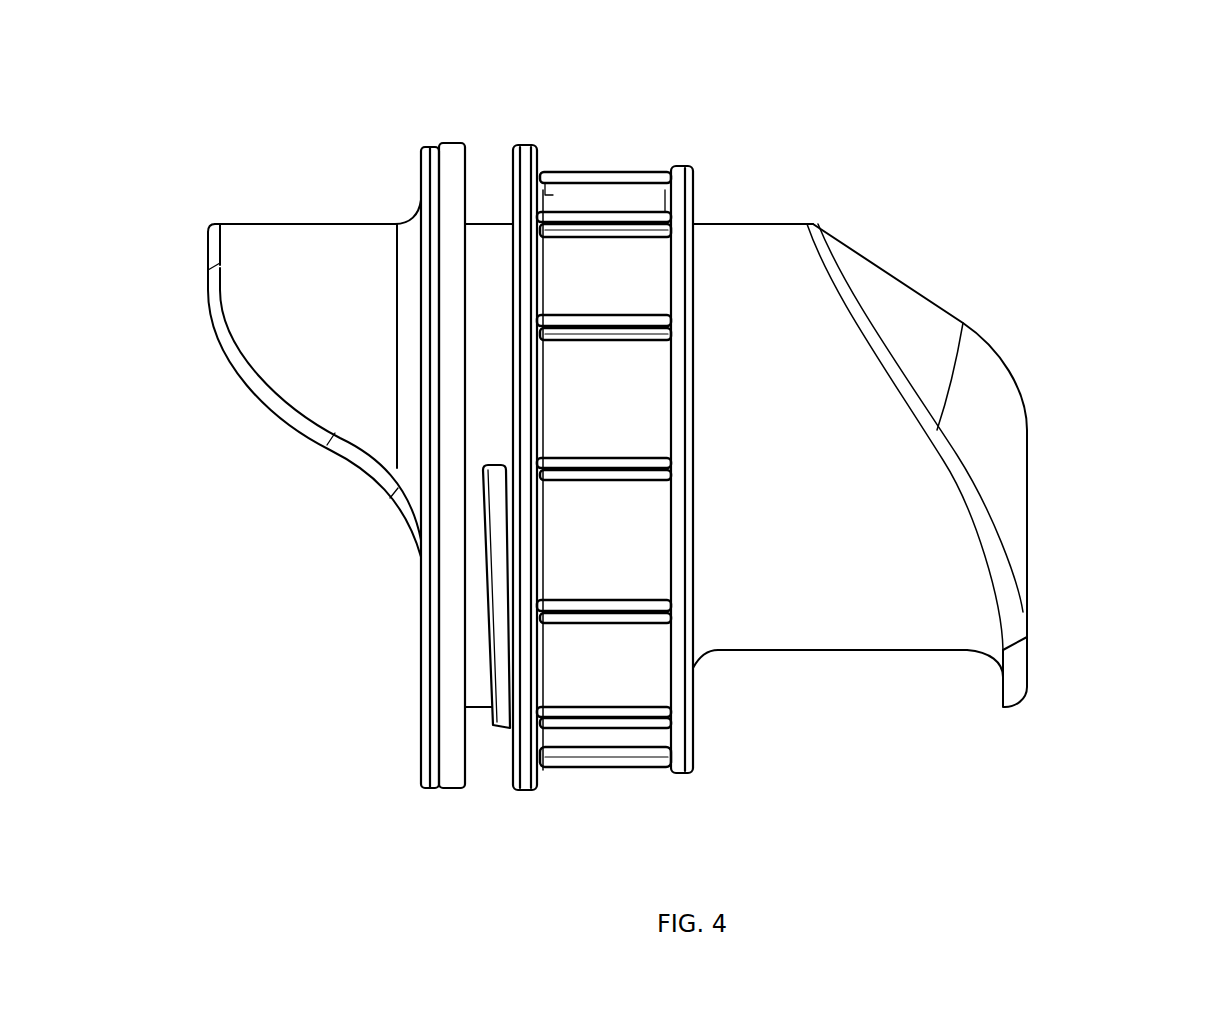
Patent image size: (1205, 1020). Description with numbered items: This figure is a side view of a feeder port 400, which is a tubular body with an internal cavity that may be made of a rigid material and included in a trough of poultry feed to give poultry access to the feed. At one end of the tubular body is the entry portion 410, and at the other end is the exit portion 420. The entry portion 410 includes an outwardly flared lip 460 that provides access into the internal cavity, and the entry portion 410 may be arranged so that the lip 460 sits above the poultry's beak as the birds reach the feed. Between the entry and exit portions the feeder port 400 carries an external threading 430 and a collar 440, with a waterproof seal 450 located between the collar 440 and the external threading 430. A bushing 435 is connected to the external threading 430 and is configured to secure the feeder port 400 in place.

The feeder port 400 is at (1141, 79).
The entry portion 410 is at (420, 567).
The exit portion 420 is at (1006, 452).
The external threading 430 is at (500, 730).
The bushing 435 is at (617, 172).
The collar 440 is at (432, 146).
The waterproof seal 450 is at (458, 790).
The outwardly flared lip 460 is at (212, 247).